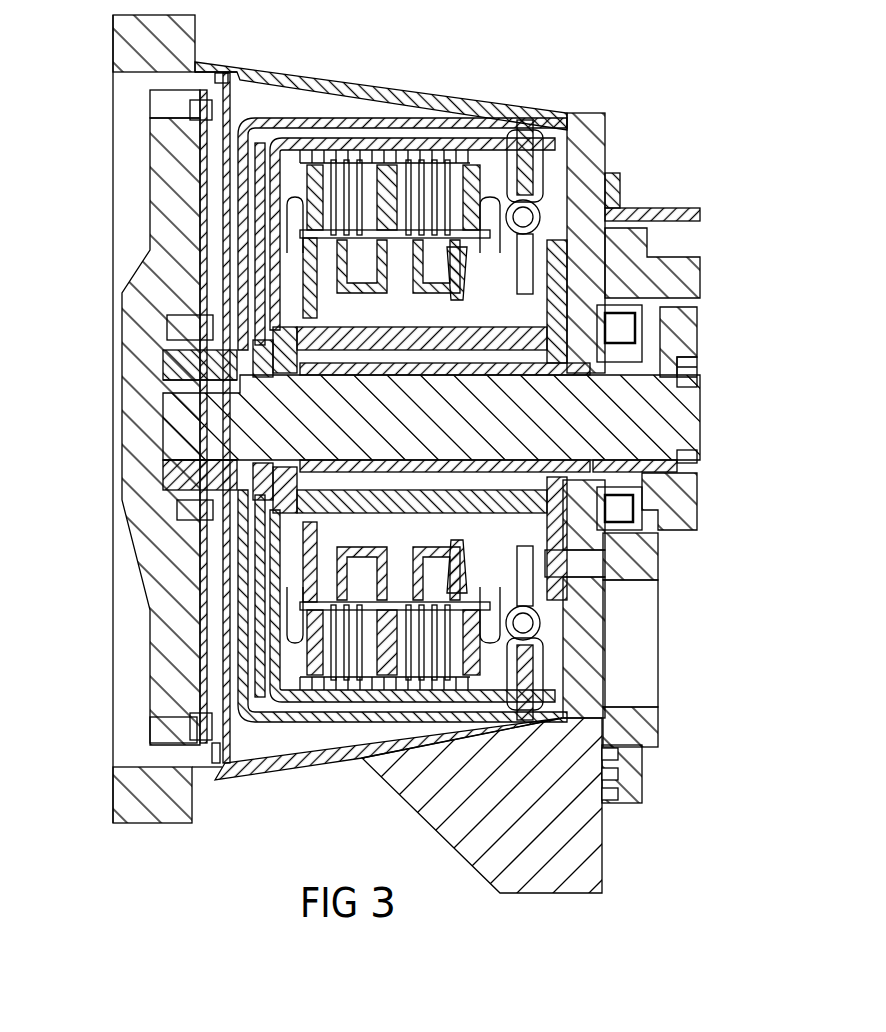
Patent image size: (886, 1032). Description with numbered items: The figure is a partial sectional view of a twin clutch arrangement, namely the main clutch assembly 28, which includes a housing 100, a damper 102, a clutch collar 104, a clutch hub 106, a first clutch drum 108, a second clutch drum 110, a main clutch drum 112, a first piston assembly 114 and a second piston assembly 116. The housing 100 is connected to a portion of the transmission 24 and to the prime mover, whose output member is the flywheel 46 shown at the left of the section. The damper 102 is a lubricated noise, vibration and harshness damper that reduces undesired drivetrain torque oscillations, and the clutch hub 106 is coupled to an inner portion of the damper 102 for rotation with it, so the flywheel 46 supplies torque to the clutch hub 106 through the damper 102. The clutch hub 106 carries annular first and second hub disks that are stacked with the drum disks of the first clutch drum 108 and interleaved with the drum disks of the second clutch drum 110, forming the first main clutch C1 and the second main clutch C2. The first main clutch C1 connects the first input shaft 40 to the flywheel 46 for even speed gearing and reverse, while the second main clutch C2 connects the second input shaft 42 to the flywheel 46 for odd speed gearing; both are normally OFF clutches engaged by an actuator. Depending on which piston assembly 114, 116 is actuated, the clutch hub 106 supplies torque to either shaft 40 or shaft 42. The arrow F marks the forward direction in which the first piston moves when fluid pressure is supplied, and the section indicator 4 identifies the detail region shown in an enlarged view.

The transmission 24 is at (591, 915).
The main clutch assembly 28 is at (342, 785).
The first input shaft 40 is at (643, 427).
The second input shaft 42 is at (677, 340).
The flywheel 46 is at (162, 247).
The housing 100 is at (532, 873).
The damper 102 is at (527, 165).
The clutch collar 104 is at (560, 372).
The clutch hub 106 is at (430, 345).
The first clutch drum 108 is at (300, 147).
The second clutch drum 110 is at (247, 68).
The main clutch drum 112 is at (402, 86).
The first piston assembly 114 is at (543, 240).
The second piston assembly 116 is at (288, 273).
The first main clutch C1 is at (530, 140).
The second main clutch C2 is at (300, 175).
The section line 4 is at (478, 152).
The forward direction arrow F is at (722, 278).